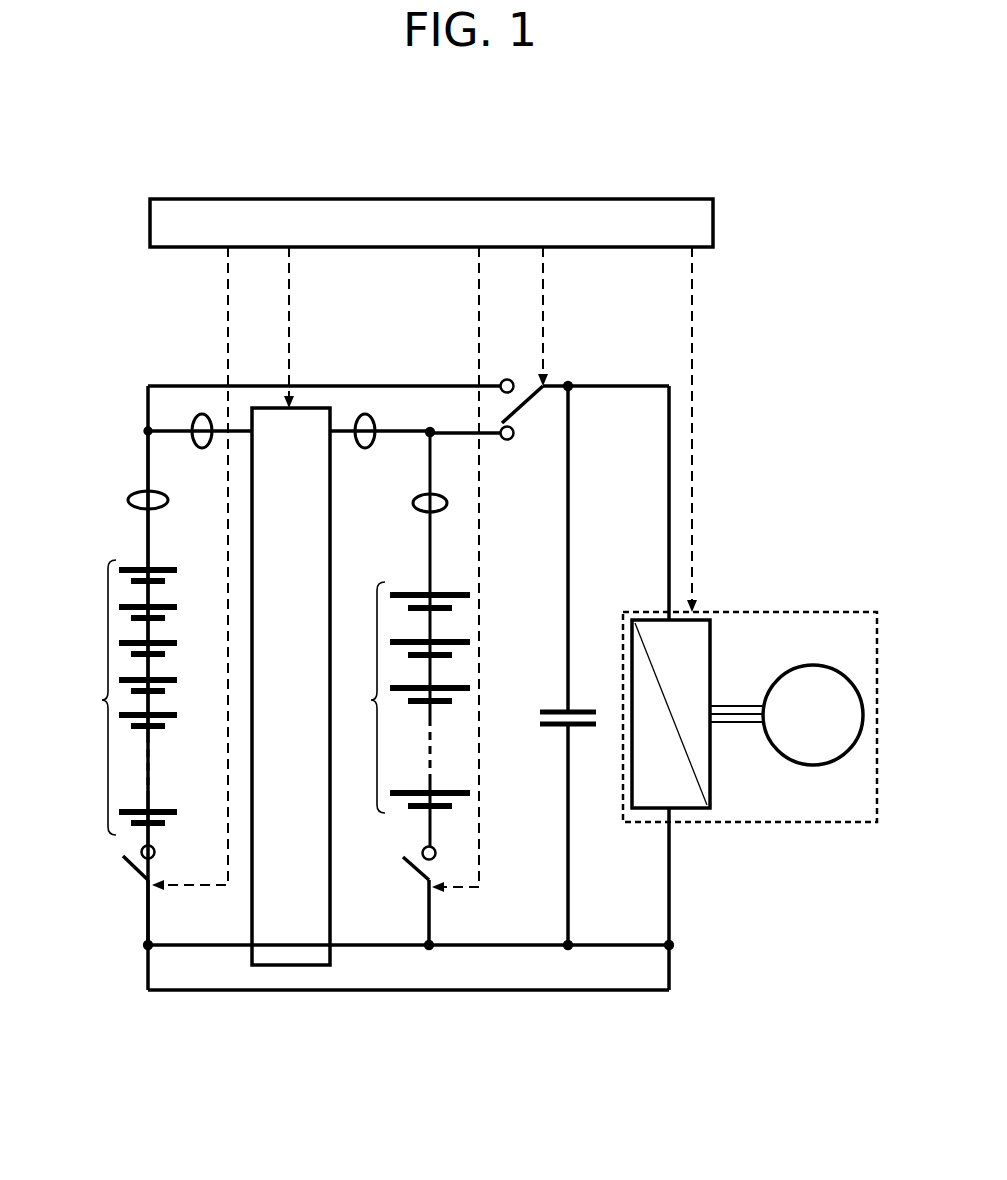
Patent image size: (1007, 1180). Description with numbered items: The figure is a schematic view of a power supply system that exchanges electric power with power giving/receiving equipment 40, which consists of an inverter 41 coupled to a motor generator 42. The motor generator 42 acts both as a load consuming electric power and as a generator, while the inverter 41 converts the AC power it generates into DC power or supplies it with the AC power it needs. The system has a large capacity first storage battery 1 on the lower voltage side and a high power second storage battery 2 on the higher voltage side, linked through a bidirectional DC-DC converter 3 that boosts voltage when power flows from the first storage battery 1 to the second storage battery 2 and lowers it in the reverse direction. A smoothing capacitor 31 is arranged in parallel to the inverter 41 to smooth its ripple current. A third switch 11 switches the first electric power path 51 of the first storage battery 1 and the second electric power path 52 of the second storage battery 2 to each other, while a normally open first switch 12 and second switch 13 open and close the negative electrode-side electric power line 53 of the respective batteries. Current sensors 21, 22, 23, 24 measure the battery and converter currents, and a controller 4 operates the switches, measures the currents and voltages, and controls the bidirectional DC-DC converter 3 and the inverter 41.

The first storage battery 1 is at (374, 702).
The second storage battery 2 is at (105, 702).
The bidirectional DC-DC converter 3 is at (288, 903).
The controller 4 is at (417, 226).
The third switch 11 is at (510, 421).
The first switch 12 is at (431, 888).
The second switch 13 is at (150, 884).
The current sensor 21 is at (425, 493).
The current sensor 22 is at (359, 416).
The current sensor 23 is at (123, 507).
The current sensor 24 is at (203, 417).
The smoothing capacitor 31 is at (582, 728).
The power giving/receiving equipment 40 is at (750, 771).
The inverter 41 is at (683, 783).
The motor generator 42 is at (802, 730).
The first electric power path 51 is at (470, 425).
The second electric power path 52 is at (440, 384).
The negative electrode-side electric power line 53 is at (430, 992).